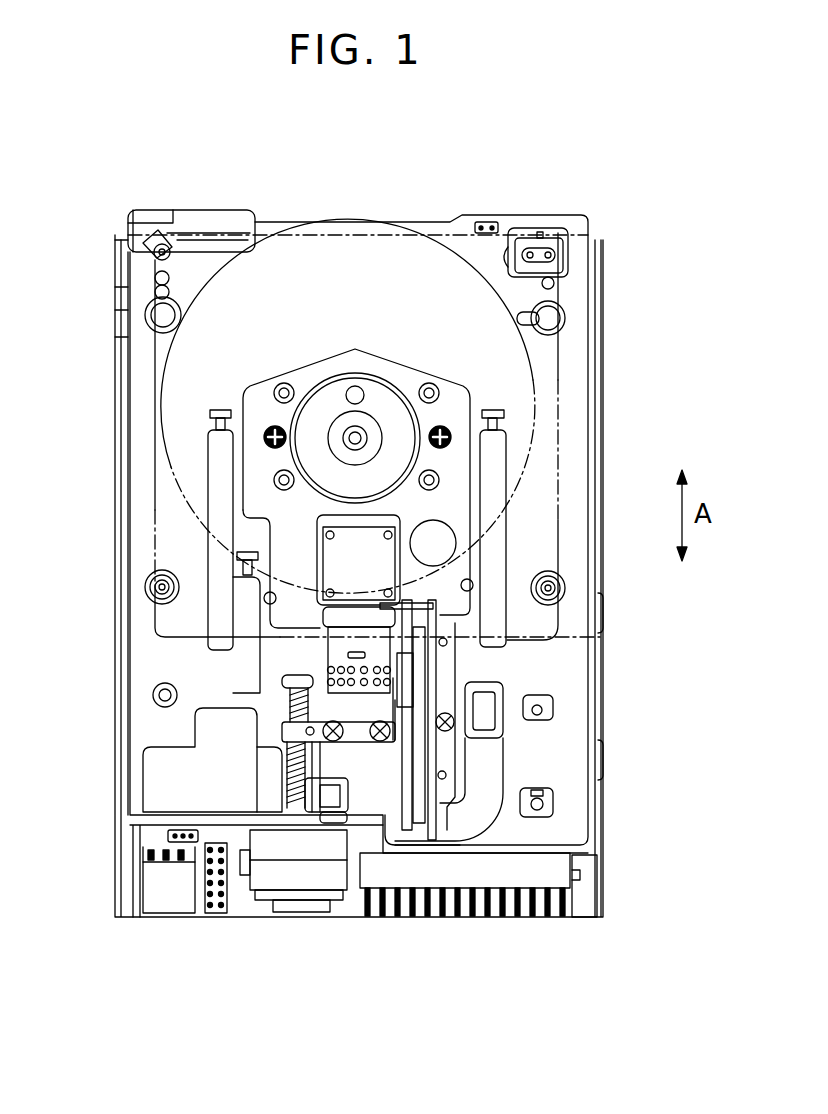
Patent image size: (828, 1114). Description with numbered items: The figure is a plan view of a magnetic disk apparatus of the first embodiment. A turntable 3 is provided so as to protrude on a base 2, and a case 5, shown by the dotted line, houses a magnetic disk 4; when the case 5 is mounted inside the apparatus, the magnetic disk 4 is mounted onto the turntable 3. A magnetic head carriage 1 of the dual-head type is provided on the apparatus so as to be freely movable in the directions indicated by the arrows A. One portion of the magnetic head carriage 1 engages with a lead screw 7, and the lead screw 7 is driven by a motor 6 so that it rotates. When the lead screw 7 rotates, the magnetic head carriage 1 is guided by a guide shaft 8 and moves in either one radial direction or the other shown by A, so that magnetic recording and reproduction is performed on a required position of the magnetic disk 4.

The magnetic head carriage 1 is at (290, 652).
The base 2 is at (140, 705).
The turntable 3 is at (393, 395).
The magnetic disk 4 is at (588, 380).
The case 5 is at (560, 451).
The motor 6 is at (263, 877).
The lead screw 7 is at (282, 703).
The guide shaft 8 is at (415, 770).